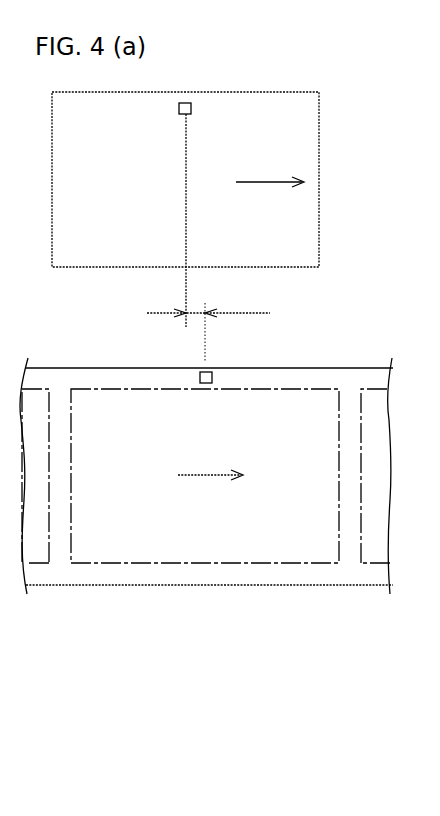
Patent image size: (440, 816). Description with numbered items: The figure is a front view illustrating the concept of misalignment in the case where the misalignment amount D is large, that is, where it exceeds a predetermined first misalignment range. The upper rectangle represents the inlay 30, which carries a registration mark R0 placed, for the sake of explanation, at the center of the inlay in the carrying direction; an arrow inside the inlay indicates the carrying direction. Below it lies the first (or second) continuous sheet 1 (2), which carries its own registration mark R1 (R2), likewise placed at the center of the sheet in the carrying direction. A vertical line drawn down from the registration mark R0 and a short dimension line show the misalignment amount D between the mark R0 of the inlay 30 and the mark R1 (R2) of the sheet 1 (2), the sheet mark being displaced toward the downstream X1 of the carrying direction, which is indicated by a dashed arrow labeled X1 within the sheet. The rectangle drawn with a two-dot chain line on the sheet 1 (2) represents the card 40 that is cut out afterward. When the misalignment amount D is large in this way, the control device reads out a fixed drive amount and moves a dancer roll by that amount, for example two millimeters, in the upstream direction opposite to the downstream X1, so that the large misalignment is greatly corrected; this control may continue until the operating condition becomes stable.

The inlay 30 is at (264, 113).
The registration mark R0 is at (192, 108).
The misalignment amount D is at (208, 327).
The first continuous sheet 1 is at (206, 503).
The second continuous sheet 2 is at (211, 573).
The card 40 is at (135, 562).
The registration mark R1 is at (266, 357).
The registration mark R2 is at (212, 378).
The downstream of the carrying direction X1 is at (210, 466).